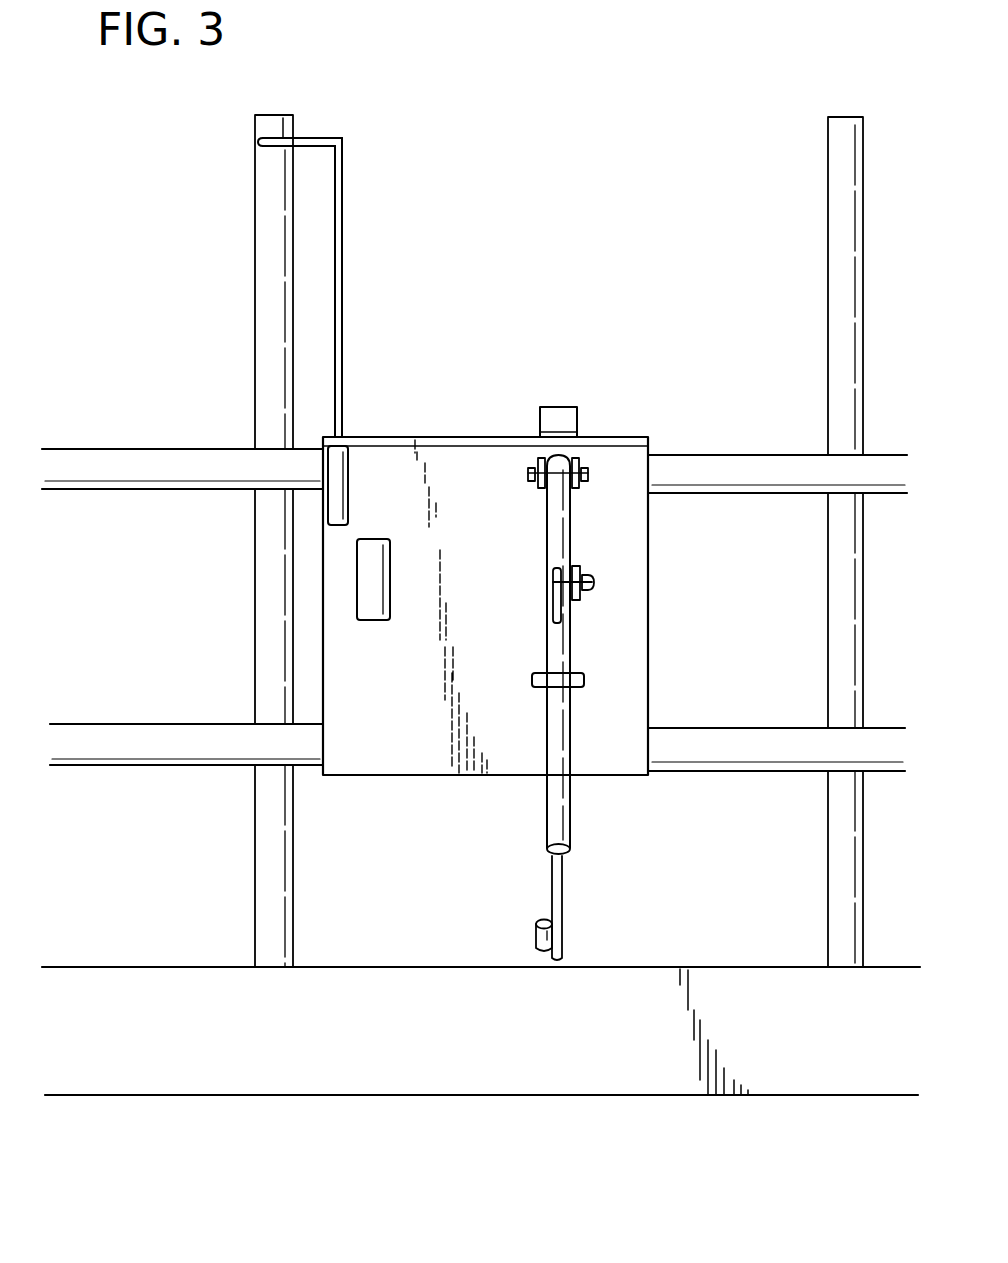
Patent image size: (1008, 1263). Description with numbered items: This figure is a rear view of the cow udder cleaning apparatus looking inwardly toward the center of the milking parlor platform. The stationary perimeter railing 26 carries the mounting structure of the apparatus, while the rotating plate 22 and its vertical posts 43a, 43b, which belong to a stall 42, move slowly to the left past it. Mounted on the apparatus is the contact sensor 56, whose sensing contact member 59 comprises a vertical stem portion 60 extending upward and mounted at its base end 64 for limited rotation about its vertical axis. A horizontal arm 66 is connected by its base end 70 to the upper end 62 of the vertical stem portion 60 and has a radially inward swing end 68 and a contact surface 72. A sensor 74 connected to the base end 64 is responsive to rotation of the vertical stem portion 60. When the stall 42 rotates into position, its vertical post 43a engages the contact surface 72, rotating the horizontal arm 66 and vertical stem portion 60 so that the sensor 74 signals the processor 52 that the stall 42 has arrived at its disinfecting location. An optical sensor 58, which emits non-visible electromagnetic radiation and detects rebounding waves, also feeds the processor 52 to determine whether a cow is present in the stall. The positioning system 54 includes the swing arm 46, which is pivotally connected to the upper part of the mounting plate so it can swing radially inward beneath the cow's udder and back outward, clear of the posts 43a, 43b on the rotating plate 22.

The rotating plate 22 is at (447, 1072).
The perimeter railing 26 is at (142, 462).
The stall 42 is at (612, 291).
The vertical post 43a is at (262, 278).
The vertical post 43b is at (838, 248).
The swing arm 46 is at (553, 805).
The processor 52 is at (380, 585).
The positioning system 54 is at (574, 818).
The contact sensor 56 is at (342, 282).
The optical sensor 58 is at (567, 420).
The sensing contact member 59 is at (345, 318).
The vertical stem portion 60 is at (342, 252).
The upper end 62 is at (342, 158).
The base end 64 is at (340, 430).
The horizontal arm 66 is at (302, 140).
The radially inward swing end 68 is at (265, 137).
The base end 70 is at (338, 142).
The contact surface 72 is at (283, 122).
The sensor 74 is at (340, 480).